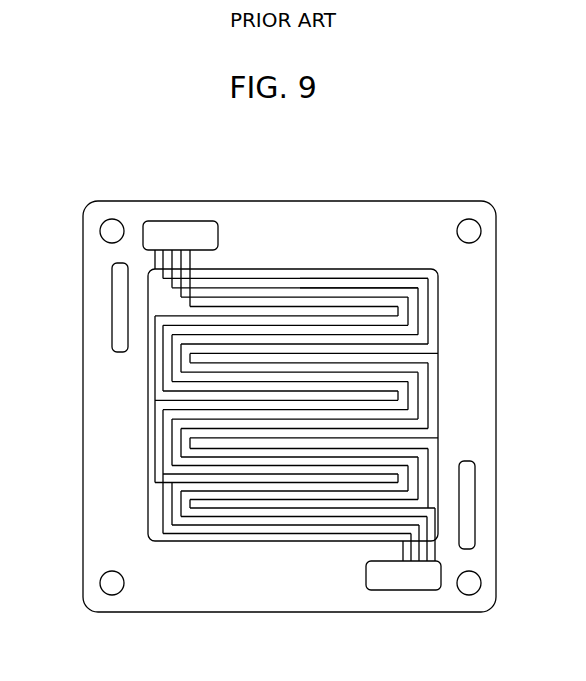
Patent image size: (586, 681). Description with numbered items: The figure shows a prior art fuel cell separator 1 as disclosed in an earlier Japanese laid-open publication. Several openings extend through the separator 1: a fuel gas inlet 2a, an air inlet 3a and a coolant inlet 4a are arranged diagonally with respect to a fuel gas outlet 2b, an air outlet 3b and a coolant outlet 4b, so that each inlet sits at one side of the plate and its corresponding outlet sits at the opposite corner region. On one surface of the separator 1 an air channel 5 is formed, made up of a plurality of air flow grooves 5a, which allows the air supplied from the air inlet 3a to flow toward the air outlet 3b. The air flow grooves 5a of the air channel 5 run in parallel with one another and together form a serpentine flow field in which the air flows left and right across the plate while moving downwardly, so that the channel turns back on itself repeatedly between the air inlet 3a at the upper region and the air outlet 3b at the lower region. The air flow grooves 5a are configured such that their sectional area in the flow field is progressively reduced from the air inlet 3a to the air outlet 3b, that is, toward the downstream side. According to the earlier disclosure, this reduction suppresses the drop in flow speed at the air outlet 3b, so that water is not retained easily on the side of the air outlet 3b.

The separator 1 is at (455, 147).
The fuel gas inlet 2a is at (120, 312).
The fuel gas outlet 2b is at (472, 497).
The air inlet 3a is at (180, 236).
The air outlet 3b is at (404, 588).
The coolant inlet 4a is at (105, 234).
The coolant outlet 4b is at (478, 584).
The air channel 5 is at (213, 289).
The air flow grooves 5a is at (383, 300).